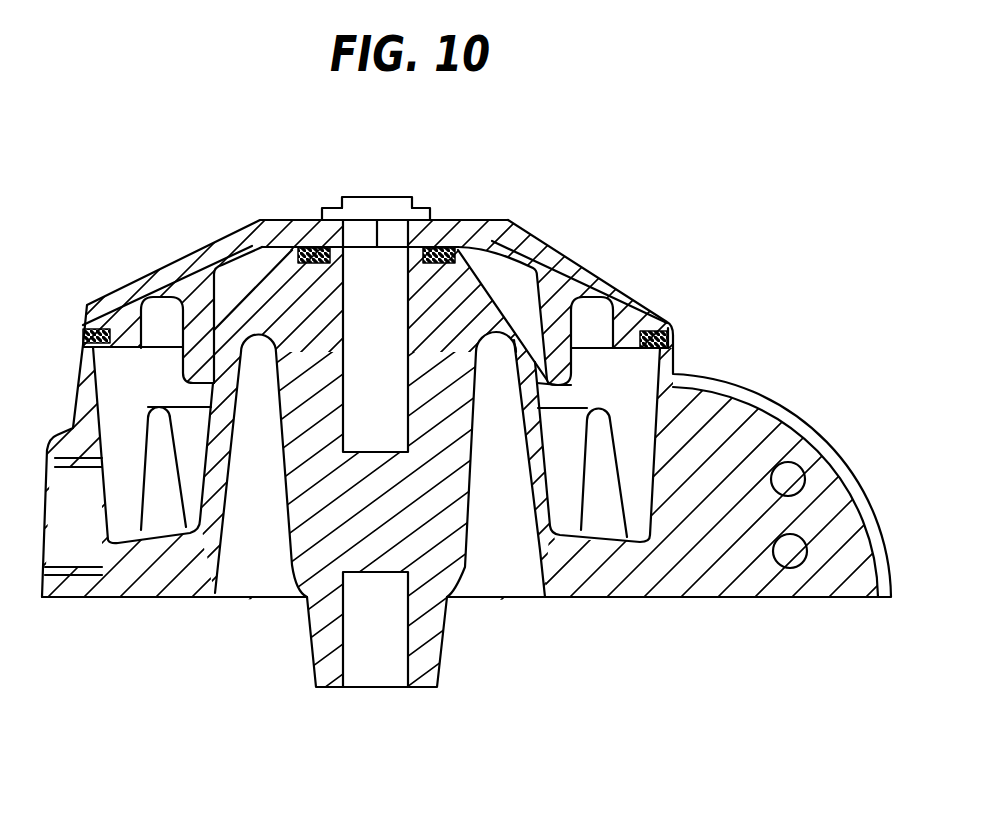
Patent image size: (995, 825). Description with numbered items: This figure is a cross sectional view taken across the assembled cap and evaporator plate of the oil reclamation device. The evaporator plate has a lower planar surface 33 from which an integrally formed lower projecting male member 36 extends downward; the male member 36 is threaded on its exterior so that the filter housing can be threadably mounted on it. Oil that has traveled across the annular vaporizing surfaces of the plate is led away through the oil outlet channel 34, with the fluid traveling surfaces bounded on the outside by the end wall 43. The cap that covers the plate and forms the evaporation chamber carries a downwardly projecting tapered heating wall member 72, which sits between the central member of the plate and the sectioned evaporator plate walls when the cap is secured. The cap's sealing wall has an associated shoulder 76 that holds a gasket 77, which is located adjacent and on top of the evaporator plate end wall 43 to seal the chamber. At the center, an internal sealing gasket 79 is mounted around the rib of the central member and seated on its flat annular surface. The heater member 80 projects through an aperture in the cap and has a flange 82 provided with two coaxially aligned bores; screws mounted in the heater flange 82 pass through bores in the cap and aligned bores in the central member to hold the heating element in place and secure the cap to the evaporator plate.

The lower planar surface 33 is at (161, 599).
The oil outlet channel 34 is at (42, 477).
The lower projecting male member 36 is at (440, 666).
The end wall 43 is at (674, 368).
The tapered heating wall member 72 is at (622, 347).
The shoulder 76 is at (652, 330).
The gasket 77 is at (668, 336).
The internal sealing gasket 79 is at (463, 255).
The heater member 80 is at (367, 197).
The flange 82 is at (431, 210).